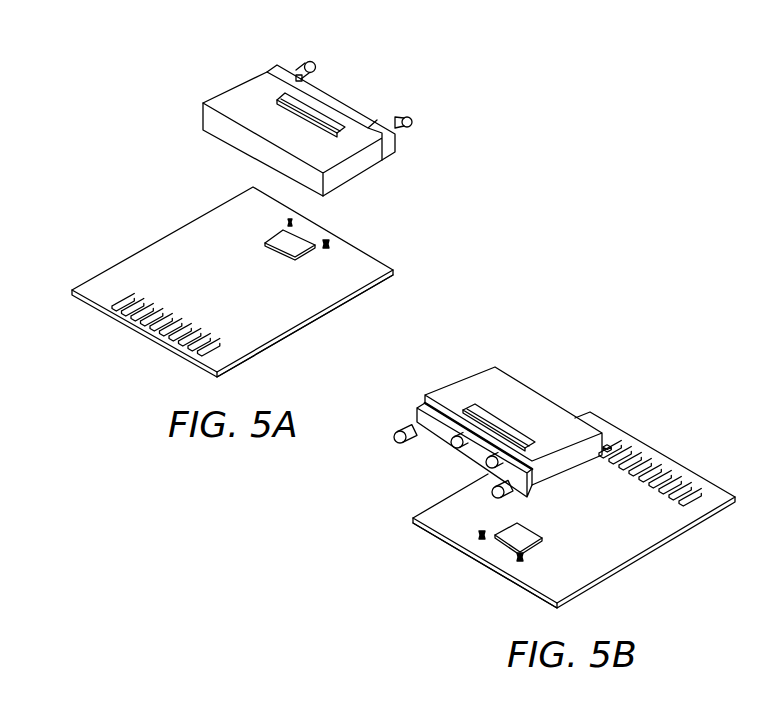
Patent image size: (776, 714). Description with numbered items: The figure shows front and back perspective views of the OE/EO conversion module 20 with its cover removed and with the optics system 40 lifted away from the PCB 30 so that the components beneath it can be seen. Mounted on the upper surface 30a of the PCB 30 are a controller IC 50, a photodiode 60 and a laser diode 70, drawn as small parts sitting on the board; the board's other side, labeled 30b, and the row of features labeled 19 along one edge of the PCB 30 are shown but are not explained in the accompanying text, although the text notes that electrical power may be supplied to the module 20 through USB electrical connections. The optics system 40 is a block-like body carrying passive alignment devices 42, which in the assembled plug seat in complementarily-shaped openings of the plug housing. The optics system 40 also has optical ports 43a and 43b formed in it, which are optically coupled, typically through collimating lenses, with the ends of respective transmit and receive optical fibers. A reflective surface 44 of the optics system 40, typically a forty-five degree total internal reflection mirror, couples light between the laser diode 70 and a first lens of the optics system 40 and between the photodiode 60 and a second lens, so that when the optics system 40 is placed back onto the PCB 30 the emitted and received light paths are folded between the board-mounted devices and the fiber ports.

In FIG. 5A, the contact pads 19 is at (128, 298).
In FIG. 5B, the contact pads 19 is at (643, 452).
In FIG. 5A, the OE/EO conversion module 20 is at (110, 90).
In FIG. 5B, the OE/EO conversion module 20 is at (659, 331).
In FIG. 5A, the PCB 30 is at (178, 228).
In FIG. 5B, the PCB 30 is at (657, 547).
In FIG. 5A, the upper surface of the PCB 30a is at (242, 222).
In FIG. 5B, the upper surface of the PCB 30a is at (432, 516).
In FIG. 5A, the second surface of circuit board 30b is at (252, 372).
In FIG. 5B, the second surface of circuit board 30b is at (597, 593).
In FIG. 5A, the optics system 40 is at (250, 100).
In FIG. 5B, the optics system 40 is at (493, 400).
In FIG. 5A, the passive alignment devices 42 is at (312, 62).
In FIG. 5B, the passive alignment devices 42 is at (400, 431).
In FIG. 5B, the optical port 43a is at (455, 448).
In FIG. 5B, the optical port 43b is at (487, 460).
In FIG. 5A, the reflective surface 44 is at (314, 118).
In FIG. 5B, the reflective surface 44 is at (516, 437).
In FIG. 5A, the controller IC 50 is at (286, 247).
In FIG. 5B, the controller IC 50 is at (513, 536).
In FIG. 5A, the photodiode 60 is at (292, 223).
In FIG. 5B, the photodiode 60 is at (520, 556).
In FIG. 5A, the laser diode 70 is at (328, 245).
In FIG. 5B, the laser diode 70 is at (478, 534).